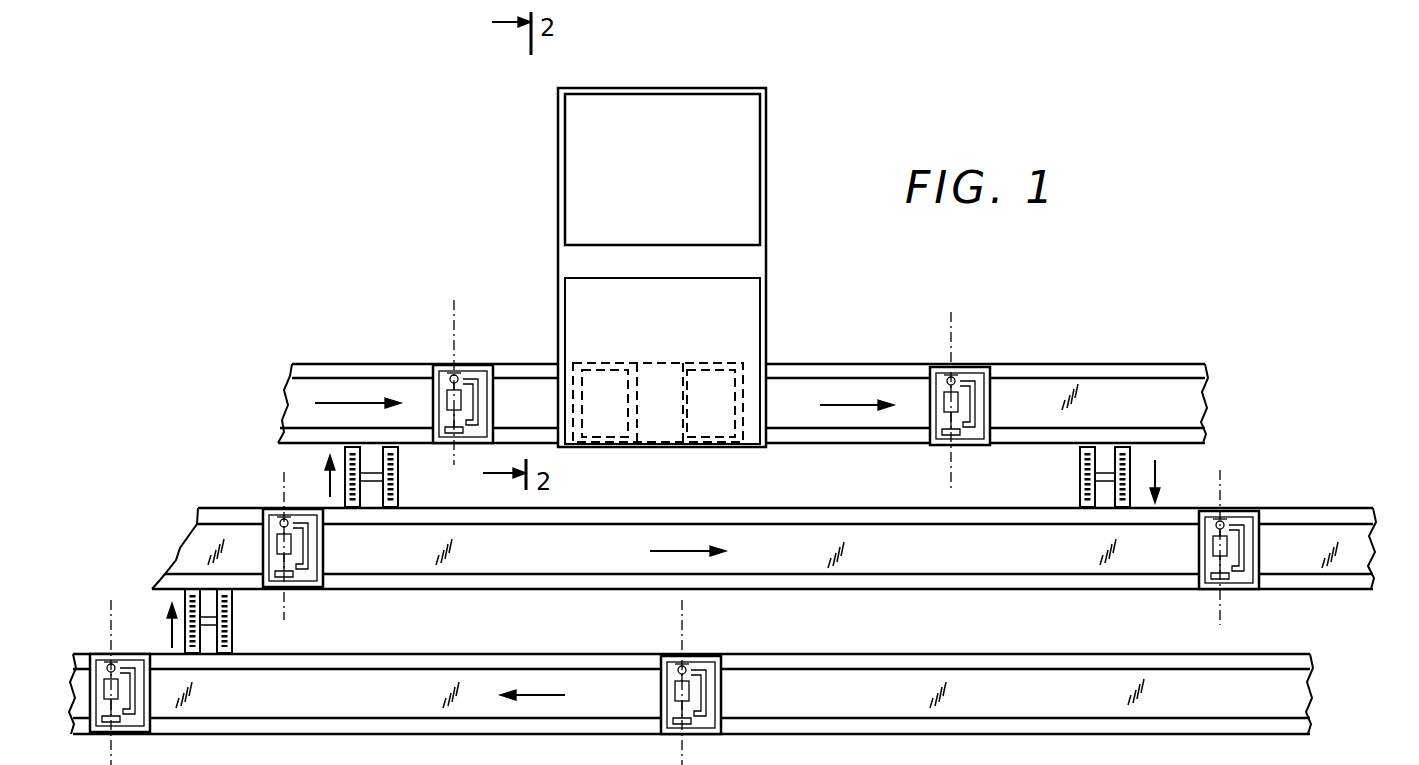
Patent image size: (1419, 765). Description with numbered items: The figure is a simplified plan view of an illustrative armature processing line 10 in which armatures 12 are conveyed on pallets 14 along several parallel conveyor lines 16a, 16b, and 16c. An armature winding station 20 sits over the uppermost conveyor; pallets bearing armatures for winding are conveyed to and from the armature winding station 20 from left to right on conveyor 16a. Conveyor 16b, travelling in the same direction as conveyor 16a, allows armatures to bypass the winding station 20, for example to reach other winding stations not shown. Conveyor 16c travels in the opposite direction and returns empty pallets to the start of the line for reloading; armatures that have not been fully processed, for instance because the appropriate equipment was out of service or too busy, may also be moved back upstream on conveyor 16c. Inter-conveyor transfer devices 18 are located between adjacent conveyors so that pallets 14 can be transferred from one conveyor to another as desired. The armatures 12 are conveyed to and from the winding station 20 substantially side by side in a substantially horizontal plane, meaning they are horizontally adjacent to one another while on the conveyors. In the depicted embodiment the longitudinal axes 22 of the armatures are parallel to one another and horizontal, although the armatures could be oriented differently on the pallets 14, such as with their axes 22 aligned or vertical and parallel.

The armature processing line 10 is at (990, 270).
The armature 12 is at (452, 404).
The pallet 14 is at (491, 395).
The conveyor line 16a is at (1158, 366).
The conveyor line 16b is at (1350, 512).
The conveyor line 16c is at (1279, 657).
The inter-conveyor transfer device 18 is at (398, 483).
The armature winding station 20 is at (774, 183).
The longitudinal axis 22 is at (453, 317).